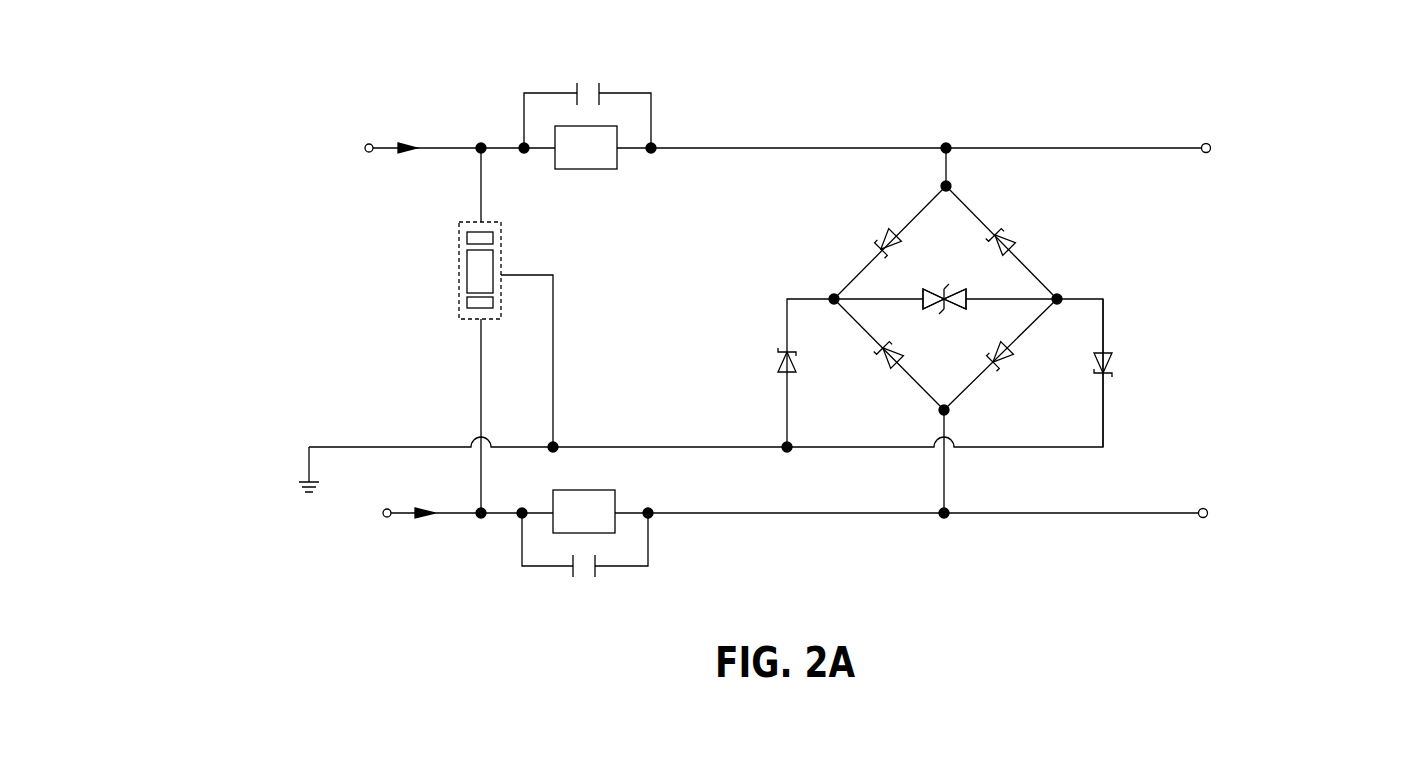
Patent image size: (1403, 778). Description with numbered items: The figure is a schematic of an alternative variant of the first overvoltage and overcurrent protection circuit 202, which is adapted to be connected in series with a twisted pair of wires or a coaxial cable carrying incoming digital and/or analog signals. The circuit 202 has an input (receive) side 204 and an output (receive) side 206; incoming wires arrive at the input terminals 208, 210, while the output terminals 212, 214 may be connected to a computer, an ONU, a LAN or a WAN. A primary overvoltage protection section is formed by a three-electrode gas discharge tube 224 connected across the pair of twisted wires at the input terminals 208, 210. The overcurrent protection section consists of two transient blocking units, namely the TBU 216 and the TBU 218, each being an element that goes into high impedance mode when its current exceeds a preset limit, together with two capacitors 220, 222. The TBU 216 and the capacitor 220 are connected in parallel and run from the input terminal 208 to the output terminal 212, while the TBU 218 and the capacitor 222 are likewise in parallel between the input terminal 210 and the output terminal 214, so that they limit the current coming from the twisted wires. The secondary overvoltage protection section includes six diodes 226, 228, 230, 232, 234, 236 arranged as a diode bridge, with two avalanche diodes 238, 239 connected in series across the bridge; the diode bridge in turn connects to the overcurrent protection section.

The first overvoltage and overcurrent protection circuit 202 is at (995, 55).
The input (receive) side 204 is at (155, 300).
The output (receive) side 206 is at (1262, 300).
The input terminal 208 is at (385, 144).
The input terminal 210 is at (400, 510).
The output terminal 212 is at (1190, 146).
The output terminal 214 is at (1188, 511).
The transient blocking unit (TBU) 216 is at (612, 170).
The transient blocking unit (TBU) 218 is at (605, 490).
The capacitor 220 is at (557, 92).
The capacitor 222 is at (614, 568).
The three-electrode gas discharge tube 224 is at (459, 260).
The diode 226 is at (886, 236).
The diode 228 is at (1005, 243).
The diode 230 is at (888, 364).
The diode 232 is at (1010, 354).
The diode 234 is at (782, 358).
The diode 236 is at (1115, 362).
The avalanche diode 238 is at (940, 312).
The avalanche diode 239 is at (960, 290).